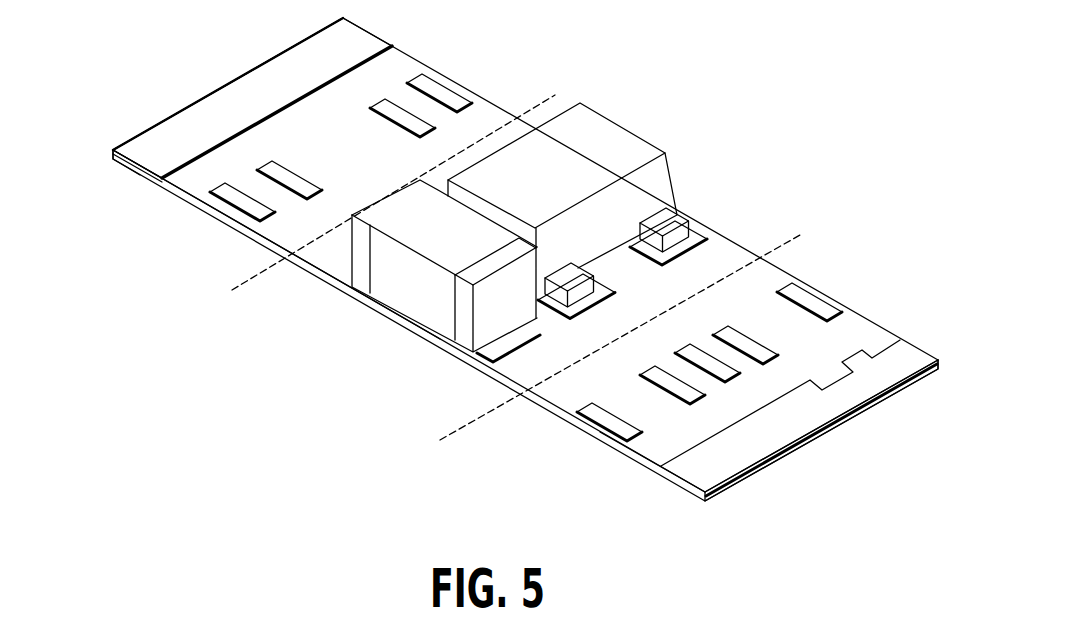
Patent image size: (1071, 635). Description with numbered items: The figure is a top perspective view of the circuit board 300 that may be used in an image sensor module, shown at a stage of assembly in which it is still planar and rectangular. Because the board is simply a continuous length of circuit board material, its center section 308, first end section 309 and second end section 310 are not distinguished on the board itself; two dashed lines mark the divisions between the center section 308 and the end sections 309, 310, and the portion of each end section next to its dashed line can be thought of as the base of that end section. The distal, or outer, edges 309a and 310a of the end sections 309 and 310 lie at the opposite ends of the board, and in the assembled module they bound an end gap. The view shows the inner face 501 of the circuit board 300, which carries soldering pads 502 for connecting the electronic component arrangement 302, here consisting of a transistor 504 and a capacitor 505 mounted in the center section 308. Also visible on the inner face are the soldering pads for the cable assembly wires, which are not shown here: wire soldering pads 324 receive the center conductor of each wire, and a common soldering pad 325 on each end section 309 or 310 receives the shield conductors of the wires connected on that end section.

The circuit board 300 is at (437, 50).
The electronic component arrangement 302 is at (632, 122).
The center section 308 is at (515, 372).
The first end section 309 is at (653, 442).
The distal edge of first end section 309a is at (833, 423).
The second end section 310 is at (197, 180).
The distal edge of second end section 310a is at (113, 154).
The wire soldering pads 324 is at (392, 110).
The common soldering pad 325 is at (357, 37).
The inner face 501 is at (662, 295).
The soldering pads 502 is at (698, 233).
The transistor 504 is at (572, 181).
The capacitor 505 is at (467, 242).